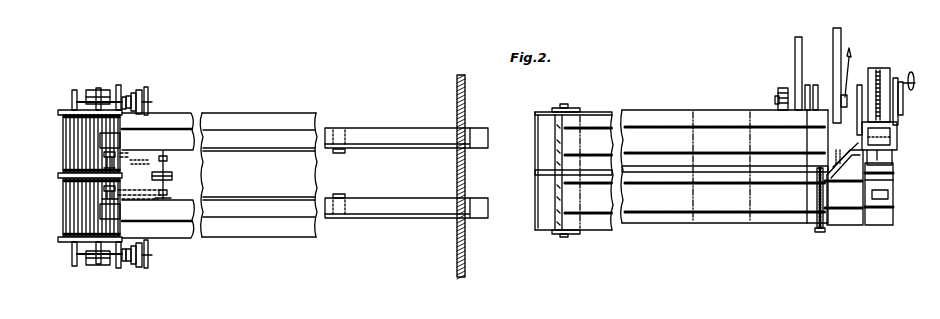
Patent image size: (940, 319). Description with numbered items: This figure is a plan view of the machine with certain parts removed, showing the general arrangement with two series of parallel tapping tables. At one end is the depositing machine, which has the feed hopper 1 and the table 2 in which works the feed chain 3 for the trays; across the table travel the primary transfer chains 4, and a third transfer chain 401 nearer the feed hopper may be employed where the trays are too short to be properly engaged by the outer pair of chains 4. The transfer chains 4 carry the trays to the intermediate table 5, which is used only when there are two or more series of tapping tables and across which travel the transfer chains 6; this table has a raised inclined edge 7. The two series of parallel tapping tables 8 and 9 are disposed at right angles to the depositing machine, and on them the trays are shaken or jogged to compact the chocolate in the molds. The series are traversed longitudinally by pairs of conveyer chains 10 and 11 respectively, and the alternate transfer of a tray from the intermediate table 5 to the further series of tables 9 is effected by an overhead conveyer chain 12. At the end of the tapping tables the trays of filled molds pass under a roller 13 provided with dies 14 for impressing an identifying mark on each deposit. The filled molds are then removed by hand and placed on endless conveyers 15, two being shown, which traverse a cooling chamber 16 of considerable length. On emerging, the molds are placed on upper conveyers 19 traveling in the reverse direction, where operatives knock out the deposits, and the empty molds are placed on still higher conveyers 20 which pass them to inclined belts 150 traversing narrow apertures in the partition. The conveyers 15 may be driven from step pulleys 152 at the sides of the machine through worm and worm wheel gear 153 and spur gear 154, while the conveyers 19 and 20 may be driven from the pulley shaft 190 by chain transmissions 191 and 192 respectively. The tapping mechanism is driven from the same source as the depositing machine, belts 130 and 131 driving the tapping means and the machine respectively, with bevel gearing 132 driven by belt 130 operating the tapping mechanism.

The feed hopper 1 is at (897, 138).
The table 2 is at (899, 98).
The feed chain 3 is at (879, 82).
The primary transfer chains 4 is at (894, 186).
The third transfer chain 401 is at (895, 172).
The intermediate table 5 is at (845, 187).
The transfer chains 6 is at (843, 192).
The raised inclined edge 7 is at (842, 159).
The series of parallel tapping tables 8 is at (668, 198).
The series of parallel tapping tables 9 is at (667, 170).
The conveyer chains 10 is at (733, 212).
The conveyer chains 11 is at (727, 153).
The overhead conveyer chain 12 is at (817, 193).
The roller 13 is at (555, 125).
The dies 14 is at (555, 139).
The endless conveyers 15 is at (64, 149).
The cooling chamber 16 is at (258, 175).
The upper conveyers 19 is at (147, 175).
The higher conveyers 20 is at (259, 175).
The inclined belts 150 is at (397, 134).
The step pulleys 152 is at (136, 92).
The worm and worm wheel gear 153 is at (96, 92).
The spur gear 154 is at (72, 108).
The pulley shaft 190 is at (164, 163).
The chain transmission 191 is at (148, 154).
The chain transmission 192 is at (129, 199).
The belt 130 is at (801, 54).
The belt 131 is at (841, 33).
The bevel gearing 132 is at (777, 99).